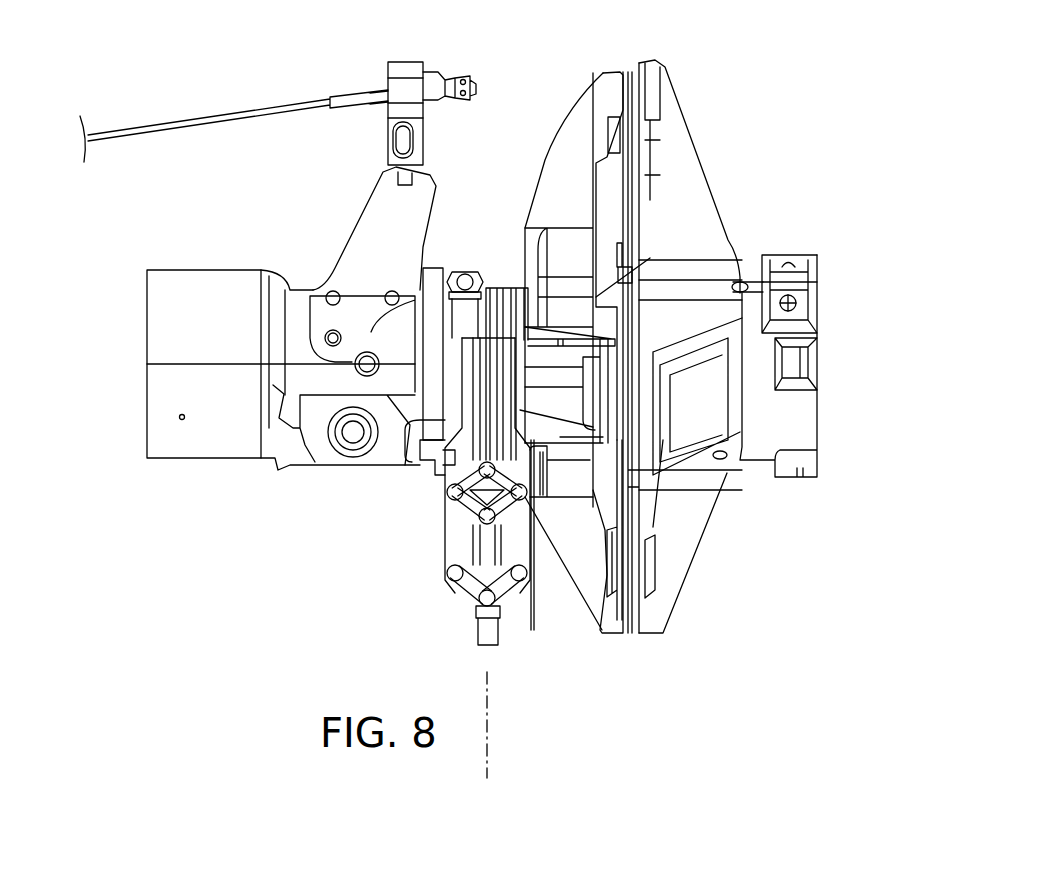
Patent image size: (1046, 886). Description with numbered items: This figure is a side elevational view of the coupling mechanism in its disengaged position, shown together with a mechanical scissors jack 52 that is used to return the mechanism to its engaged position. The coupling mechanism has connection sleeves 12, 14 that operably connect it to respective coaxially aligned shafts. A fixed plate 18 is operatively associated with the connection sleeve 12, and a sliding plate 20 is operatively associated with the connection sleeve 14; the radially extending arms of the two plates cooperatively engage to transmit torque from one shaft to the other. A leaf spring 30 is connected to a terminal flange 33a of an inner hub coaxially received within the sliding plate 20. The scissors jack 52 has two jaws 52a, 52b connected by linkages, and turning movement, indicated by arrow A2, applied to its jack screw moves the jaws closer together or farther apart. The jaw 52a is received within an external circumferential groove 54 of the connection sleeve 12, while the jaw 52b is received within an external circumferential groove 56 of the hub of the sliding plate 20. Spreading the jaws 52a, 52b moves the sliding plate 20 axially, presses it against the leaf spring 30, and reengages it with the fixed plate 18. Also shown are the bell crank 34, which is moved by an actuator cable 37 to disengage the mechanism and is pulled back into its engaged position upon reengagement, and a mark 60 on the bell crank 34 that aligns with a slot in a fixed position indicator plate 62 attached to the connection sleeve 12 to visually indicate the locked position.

The connection sleeve 12 is at (222, 337).
The connection sleeve 14 is at (797, 434).
The fixed plate 18 is at (690, 150).
The sliding plate 20 is at (600, 130).
The leaf spring 30 is at (632, 207).
The terminal flange 33a is at (622, 260).
The bell crank 34 is at (400, 88).
The actuator cable 37 is at (131, 129).
The mechanical scissors jack 52 is at (428, 551).
The jaw 52a is at (423, 462).
The jaw 52b is at (523, 403).
The external circumferential groove 54 is at (458, 268).
The external circumferential groove 56 is at (522, 287).
The mark 60 is at (393, 123).
The fixed position indicator plate 62 is at (409, 242).
The turning movement A2 is at (478, 752).